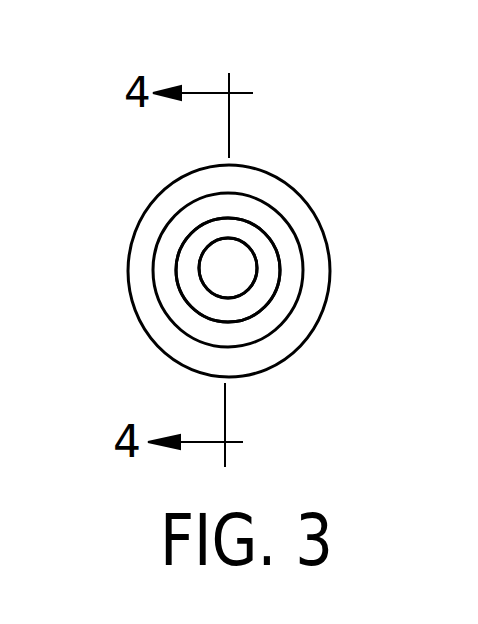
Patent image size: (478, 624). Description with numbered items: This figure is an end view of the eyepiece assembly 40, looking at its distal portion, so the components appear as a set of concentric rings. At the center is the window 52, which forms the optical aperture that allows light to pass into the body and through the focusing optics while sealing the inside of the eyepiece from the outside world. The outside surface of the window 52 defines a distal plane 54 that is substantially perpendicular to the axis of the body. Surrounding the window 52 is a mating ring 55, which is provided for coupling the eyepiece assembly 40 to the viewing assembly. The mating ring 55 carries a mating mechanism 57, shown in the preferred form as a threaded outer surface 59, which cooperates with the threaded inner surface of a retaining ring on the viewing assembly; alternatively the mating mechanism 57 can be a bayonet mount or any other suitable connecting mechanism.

The eyepiece assembly 40 is at (301, 179).
The window 52 is at (232, 275).
The distal plane 54 is at (242, 268).
The mating ring 55 is at (252, 237).
The mating mechanism 57 is at (273, 295).
The threaded outer surface 59 is at (265, 310).